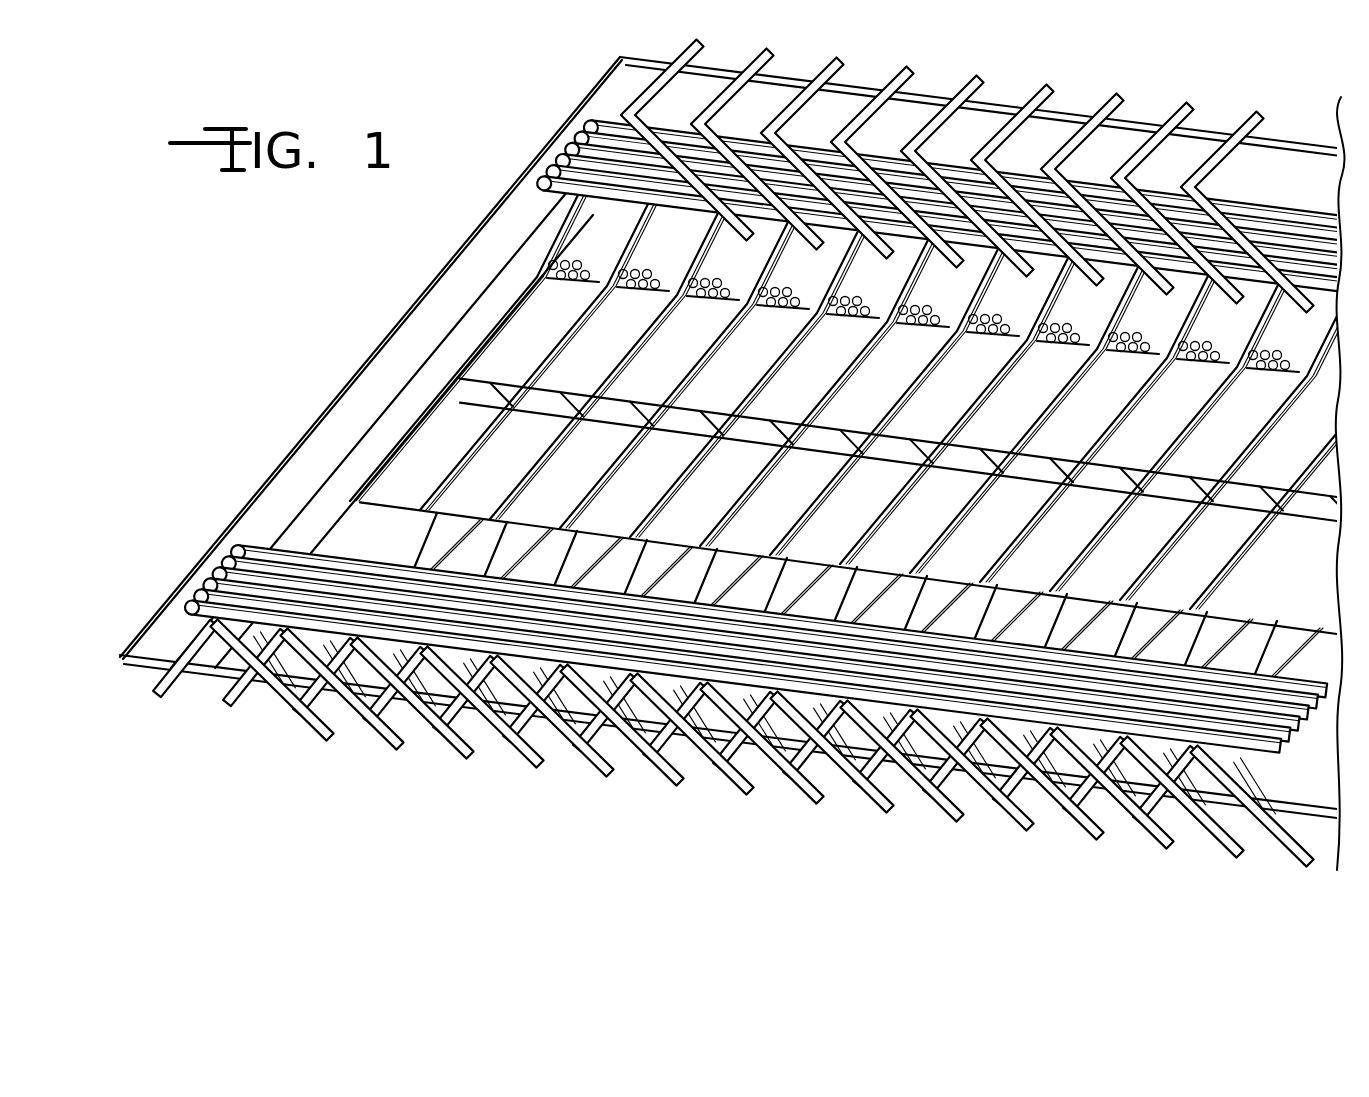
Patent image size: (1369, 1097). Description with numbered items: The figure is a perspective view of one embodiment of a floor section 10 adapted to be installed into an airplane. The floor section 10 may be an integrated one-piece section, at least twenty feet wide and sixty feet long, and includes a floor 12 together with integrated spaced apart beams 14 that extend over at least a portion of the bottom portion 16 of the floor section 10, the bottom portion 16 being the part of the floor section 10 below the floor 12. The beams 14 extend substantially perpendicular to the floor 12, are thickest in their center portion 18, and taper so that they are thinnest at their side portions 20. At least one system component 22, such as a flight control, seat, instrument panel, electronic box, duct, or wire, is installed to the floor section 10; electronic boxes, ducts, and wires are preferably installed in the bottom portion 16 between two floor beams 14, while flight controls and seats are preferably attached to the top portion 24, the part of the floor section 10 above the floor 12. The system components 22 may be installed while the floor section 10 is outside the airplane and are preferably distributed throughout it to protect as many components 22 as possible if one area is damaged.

The floor section 10 is at (1218, 92).
The floor 12 is at (430, 287).
The integrated spaced apart beams 14 is at (323, 505).
The bottom portion 16 is at (585, 233).
The center portion 18 is at (415, 408).
The side portions 20 is at (556, 203).
The system component 22 is at (733, 188).
The top portion 24 is at (403, 313).